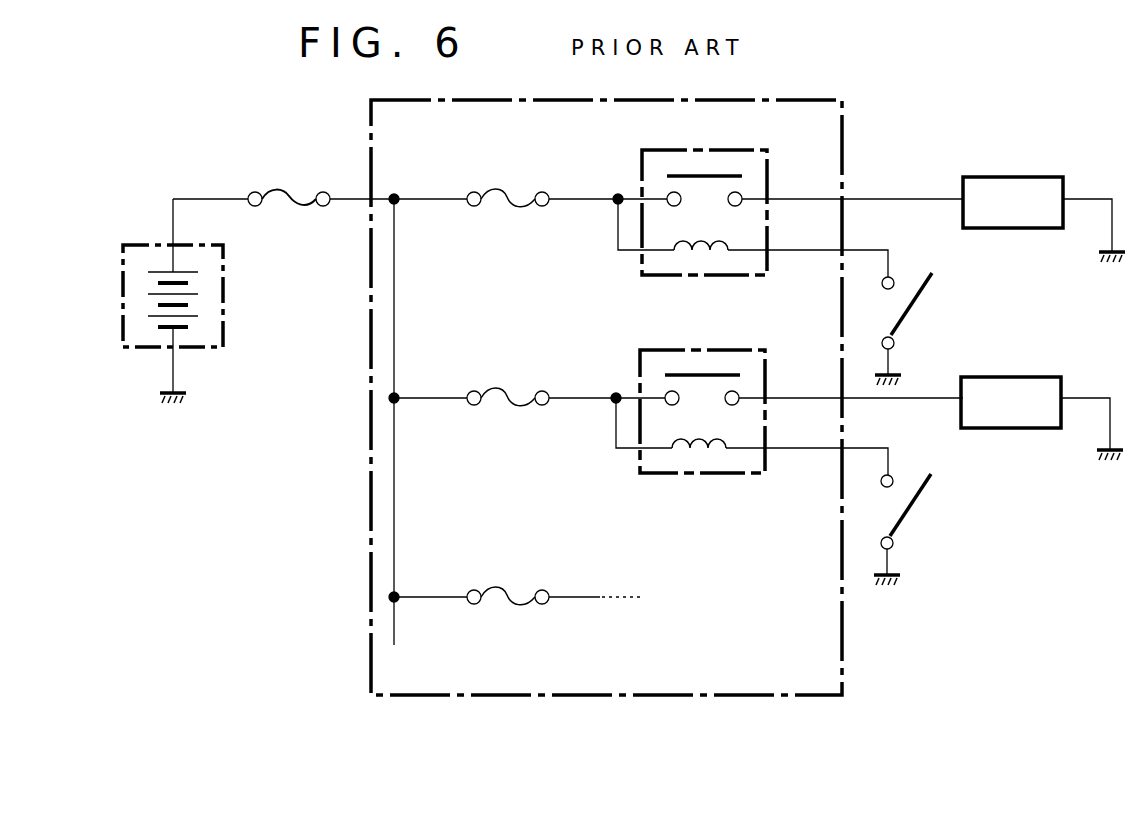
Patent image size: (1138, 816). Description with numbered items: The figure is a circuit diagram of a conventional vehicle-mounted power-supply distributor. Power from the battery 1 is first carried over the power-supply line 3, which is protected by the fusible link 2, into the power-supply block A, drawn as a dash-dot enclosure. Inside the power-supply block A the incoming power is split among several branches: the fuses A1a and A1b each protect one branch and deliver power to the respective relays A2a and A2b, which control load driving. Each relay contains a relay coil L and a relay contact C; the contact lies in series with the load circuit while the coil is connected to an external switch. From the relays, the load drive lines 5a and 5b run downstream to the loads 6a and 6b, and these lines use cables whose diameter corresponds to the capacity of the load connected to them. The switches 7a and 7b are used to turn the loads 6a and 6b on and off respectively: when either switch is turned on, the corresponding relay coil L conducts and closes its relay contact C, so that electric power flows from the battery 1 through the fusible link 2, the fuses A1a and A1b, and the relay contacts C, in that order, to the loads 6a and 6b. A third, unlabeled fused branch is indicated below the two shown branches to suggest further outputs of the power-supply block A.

The battery 1 is at (224, 330).
The fusible link 2 is at (282, 182).
The power-supply line 3 is at (356, 195).
The power-supply block A is at (588, 100).
The fuse A1a is at (506, 192).
The fuse A1b is at (506, 391).
The relay A2a is at (682, 150).
The relay A2b is at (680, 350).
The relay contact C is at (688, 168).
The relay coil L is at (703, 262).
The load drive line 5a is at (895, 197).
The load drive line 5b is at (917, 396).
The load 6a is at (990, 177).
The load 6b is at (990, 377).
The switch 7a is at (920, 310).
The switch 7b is at (910, 523).